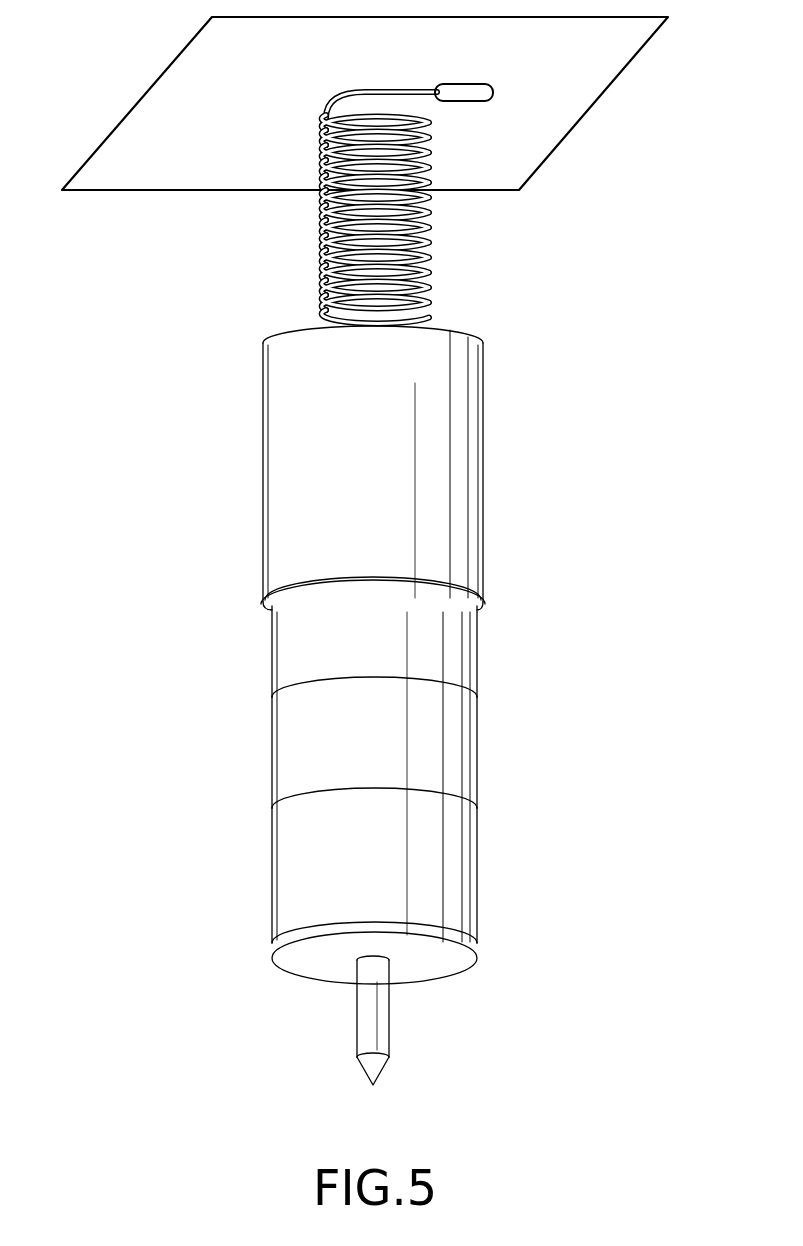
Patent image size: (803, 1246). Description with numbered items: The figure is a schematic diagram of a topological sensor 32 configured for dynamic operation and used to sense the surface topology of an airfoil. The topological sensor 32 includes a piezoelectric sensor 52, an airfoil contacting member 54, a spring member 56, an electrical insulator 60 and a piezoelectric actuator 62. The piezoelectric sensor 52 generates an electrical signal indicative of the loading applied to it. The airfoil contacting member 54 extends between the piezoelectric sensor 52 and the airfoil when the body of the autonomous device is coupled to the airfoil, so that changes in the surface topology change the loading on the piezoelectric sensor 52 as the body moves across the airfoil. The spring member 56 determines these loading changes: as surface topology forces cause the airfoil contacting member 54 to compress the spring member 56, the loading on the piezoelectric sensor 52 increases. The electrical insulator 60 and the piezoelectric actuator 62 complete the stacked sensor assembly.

The topological sensor 32 is at (464, 584).
The piezoelectric sensor 52 is at (391, 874).
The airfoil contacting member 54 is at (357, 1028).
The spring member 56 is at (432, 221).
The electrical insulator 60 is at (393, 750).
The piezoelectric actuator 62 is at (500, 329).